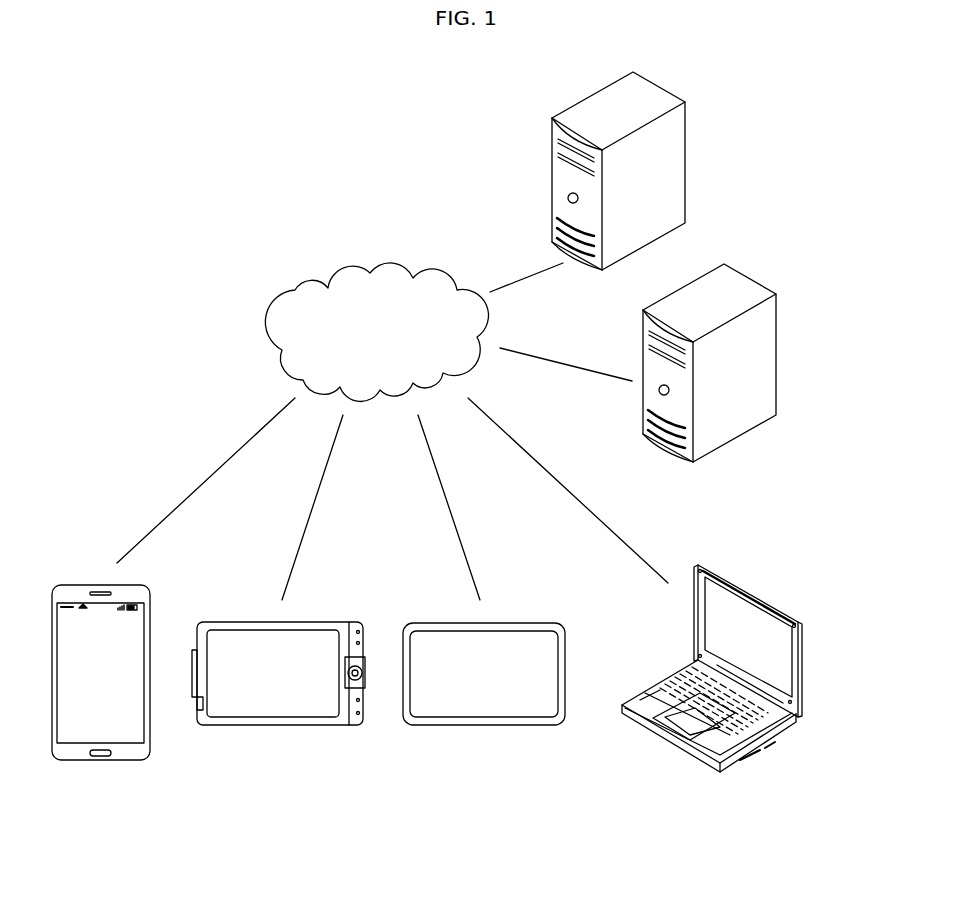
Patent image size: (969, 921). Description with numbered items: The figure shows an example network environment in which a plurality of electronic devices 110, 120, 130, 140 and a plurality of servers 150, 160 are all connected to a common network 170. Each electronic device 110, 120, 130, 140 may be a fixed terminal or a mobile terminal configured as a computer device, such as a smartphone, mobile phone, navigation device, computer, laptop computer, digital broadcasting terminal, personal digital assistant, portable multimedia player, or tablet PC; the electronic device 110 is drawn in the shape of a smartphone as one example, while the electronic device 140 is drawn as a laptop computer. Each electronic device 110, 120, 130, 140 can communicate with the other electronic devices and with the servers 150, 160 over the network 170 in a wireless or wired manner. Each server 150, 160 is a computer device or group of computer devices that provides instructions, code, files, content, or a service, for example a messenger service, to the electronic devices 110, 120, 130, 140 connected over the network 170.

The electronic device 110 is at (99, 760).
The electronic device 120 is at (278, 725).
The electronic device 130 is at (484, 725).
The electronic device 140 is at (802, 667).
The server 150 is at (777, 352).
The server 160 is at (685, 158).
The network 170 is at (388, 267).